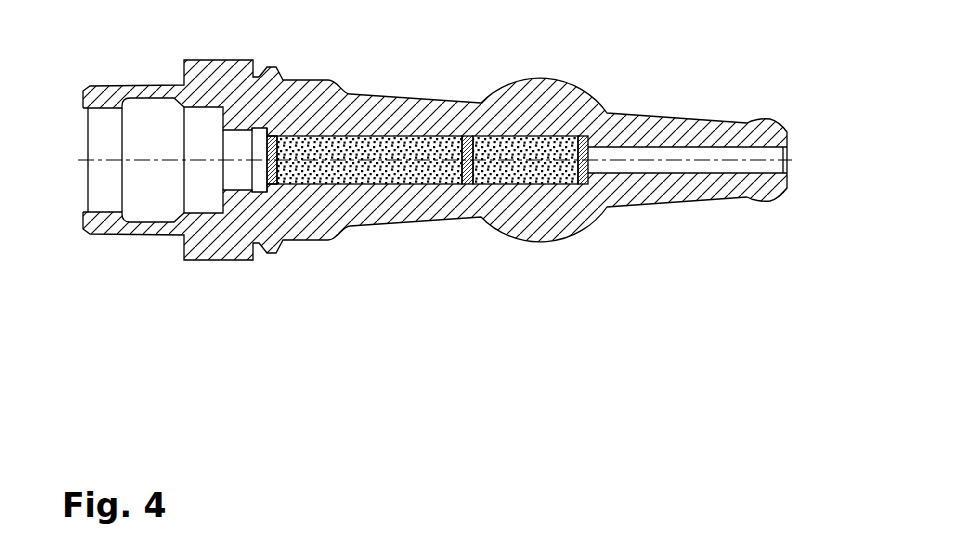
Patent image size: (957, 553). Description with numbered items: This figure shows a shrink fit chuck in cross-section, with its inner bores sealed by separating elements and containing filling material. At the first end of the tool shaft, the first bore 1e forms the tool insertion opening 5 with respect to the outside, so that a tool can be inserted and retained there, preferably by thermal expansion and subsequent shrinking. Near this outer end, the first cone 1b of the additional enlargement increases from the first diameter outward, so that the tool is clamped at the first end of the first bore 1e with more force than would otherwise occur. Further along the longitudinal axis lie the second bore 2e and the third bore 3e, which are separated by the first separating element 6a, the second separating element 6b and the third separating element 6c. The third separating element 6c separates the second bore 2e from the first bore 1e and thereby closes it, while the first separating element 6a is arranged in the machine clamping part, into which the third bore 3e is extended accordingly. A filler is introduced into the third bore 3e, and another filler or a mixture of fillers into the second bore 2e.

The first bore 1e is at (673, 165).
The first cone 1b is at (782, 130).
The tool insertion opening 5 is at (770, 157).
The first separating element 6a is at (279, 136).
The second separating element 6b is at (468, 136).
The third separating element 6c is at (585, 136).
The third bore 3e is at (365, 165).
The second bore 2e is at (533, 165).